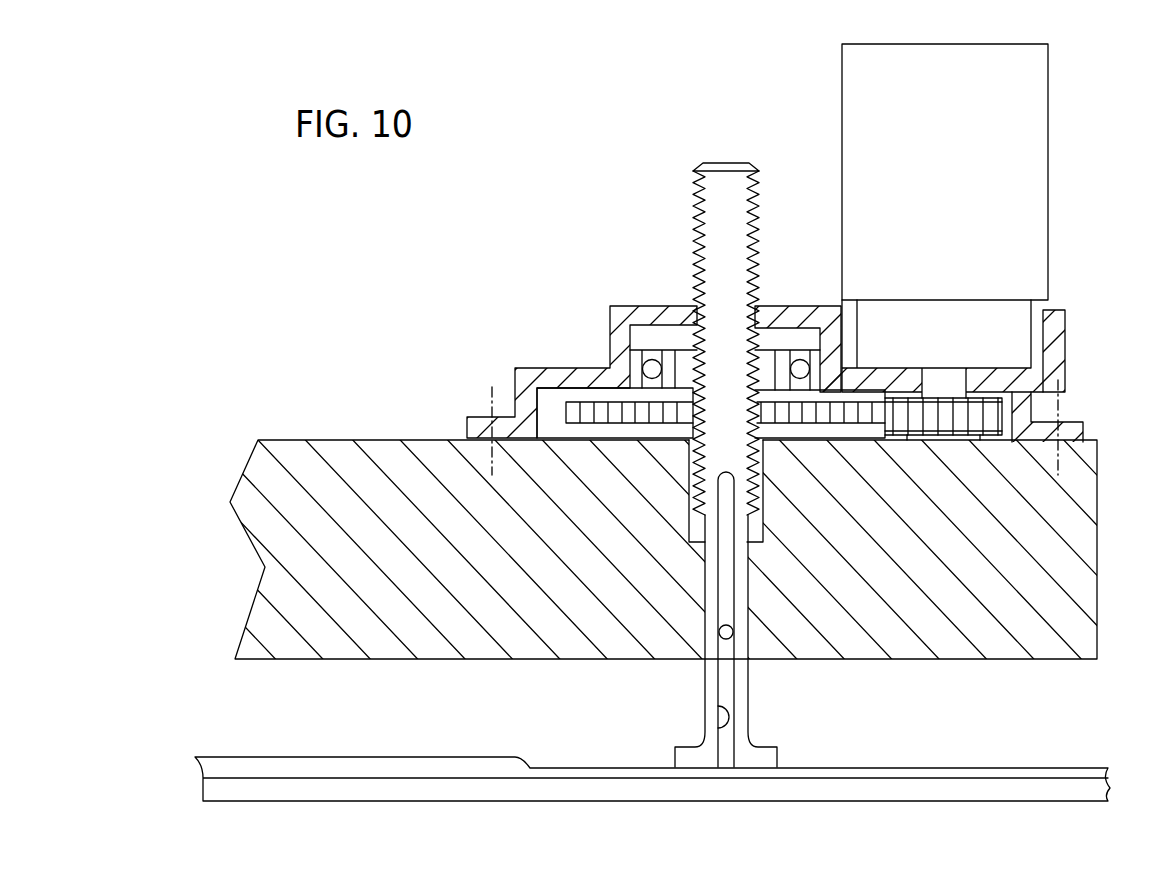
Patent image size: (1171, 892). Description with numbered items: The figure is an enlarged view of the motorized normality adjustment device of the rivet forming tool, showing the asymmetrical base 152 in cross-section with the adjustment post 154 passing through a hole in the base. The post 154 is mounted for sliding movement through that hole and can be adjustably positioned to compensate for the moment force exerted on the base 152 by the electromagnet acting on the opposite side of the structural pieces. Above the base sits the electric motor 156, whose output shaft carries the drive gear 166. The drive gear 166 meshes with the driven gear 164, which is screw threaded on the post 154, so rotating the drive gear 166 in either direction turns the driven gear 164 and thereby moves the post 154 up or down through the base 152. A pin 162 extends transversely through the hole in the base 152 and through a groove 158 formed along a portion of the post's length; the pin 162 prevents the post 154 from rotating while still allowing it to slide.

The asymmetrical base 152 is at (376, 438).
The adjustment post 154 is at (750, 698).
The electric motor 156 is at (1038, 194).
The groove 158 is at (720, 729).
The pin 162 is at (726, 640).
The driven gear 164 is at (597, 402).
The drive gear 166 is at (1003, 412).